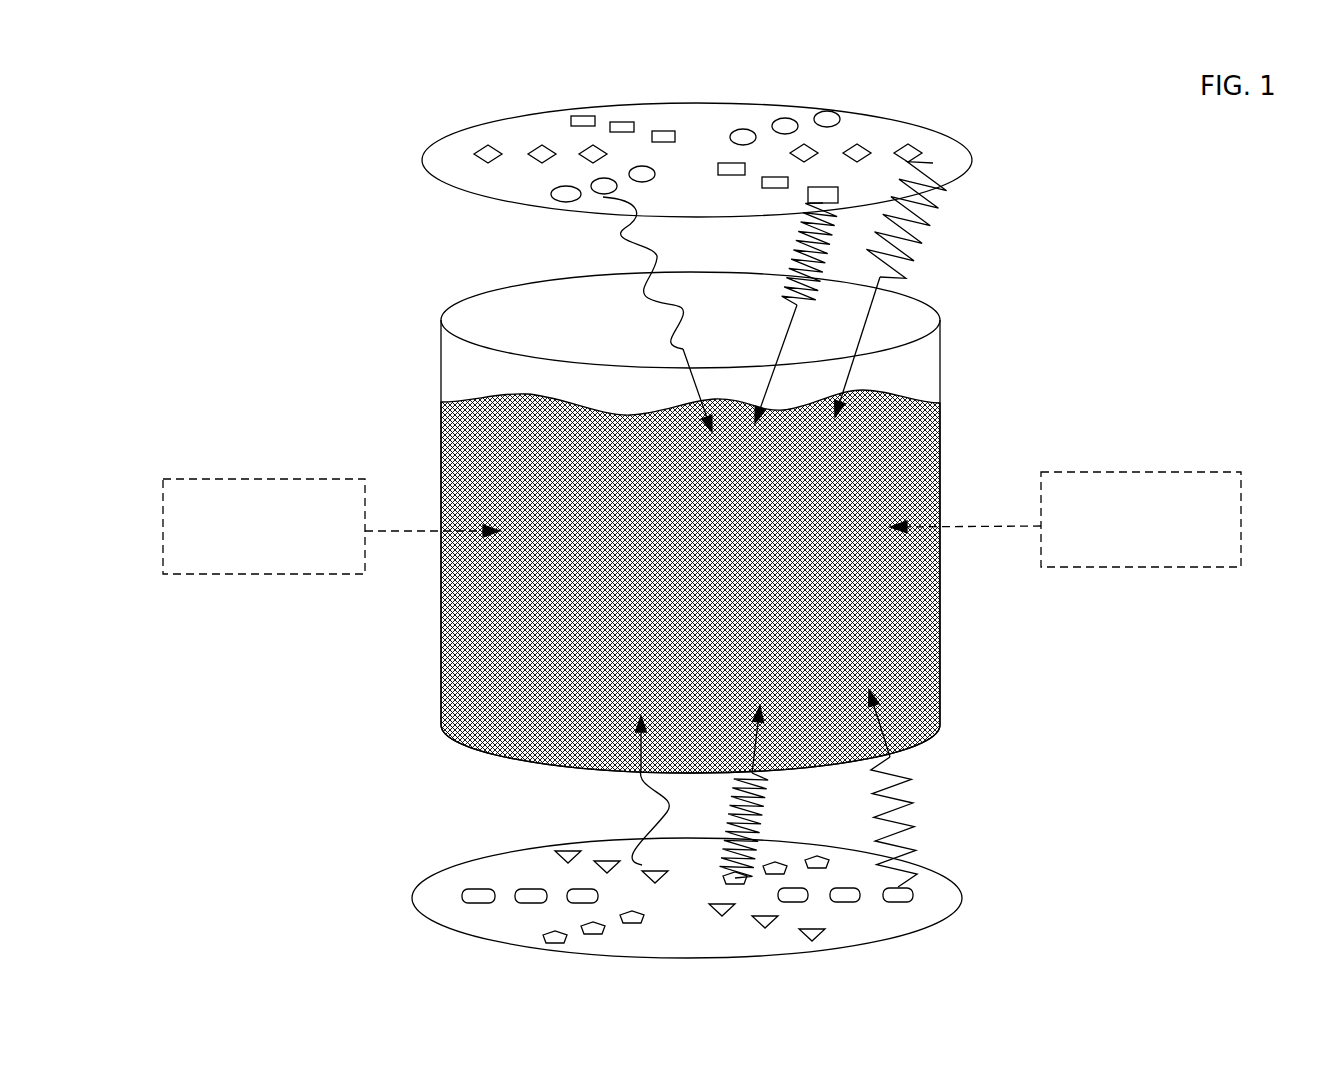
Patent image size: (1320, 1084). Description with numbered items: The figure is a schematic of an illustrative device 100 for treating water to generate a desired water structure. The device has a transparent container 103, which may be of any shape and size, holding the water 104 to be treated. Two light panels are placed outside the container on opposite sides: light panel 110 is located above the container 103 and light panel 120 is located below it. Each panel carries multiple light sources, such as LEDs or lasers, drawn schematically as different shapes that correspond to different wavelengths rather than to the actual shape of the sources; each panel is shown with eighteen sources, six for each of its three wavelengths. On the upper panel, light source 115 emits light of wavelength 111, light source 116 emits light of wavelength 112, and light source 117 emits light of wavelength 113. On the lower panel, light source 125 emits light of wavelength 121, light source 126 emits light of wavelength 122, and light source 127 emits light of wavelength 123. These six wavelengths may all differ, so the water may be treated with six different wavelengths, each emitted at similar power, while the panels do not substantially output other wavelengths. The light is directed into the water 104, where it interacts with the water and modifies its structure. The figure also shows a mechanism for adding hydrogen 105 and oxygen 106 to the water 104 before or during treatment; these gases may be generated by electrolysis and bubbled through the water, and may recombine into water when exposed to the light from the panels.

The device 100 is at (713, 79).
The transparent container 103 is at (940, 362).
The water 104 is at (915, 475).
The hydrogen 105 is at (162, 512).
The oxygen 106 is at (1241, 522).
The light panel 110 is at (972, 158).
The wavelength 111 is at (582, 262).
The wavelength 112 is at (728, 253).
The wavelength 113 is at (957, 237).
The light source 115 is at (592, 178).
The light source 116 is at (823, 192).
The light source 117 is at (905, 153).
The light panel 120 is at (960, 893).
The wavelength 121 is at (605, 797).
The wavelength 122 is at (778, 802).
The wavelength 123 is at (920, 787).
The light source 125 is at (647, 865).
The light source 126 is at (720, 873).
The light source 127 is at (907, 887).